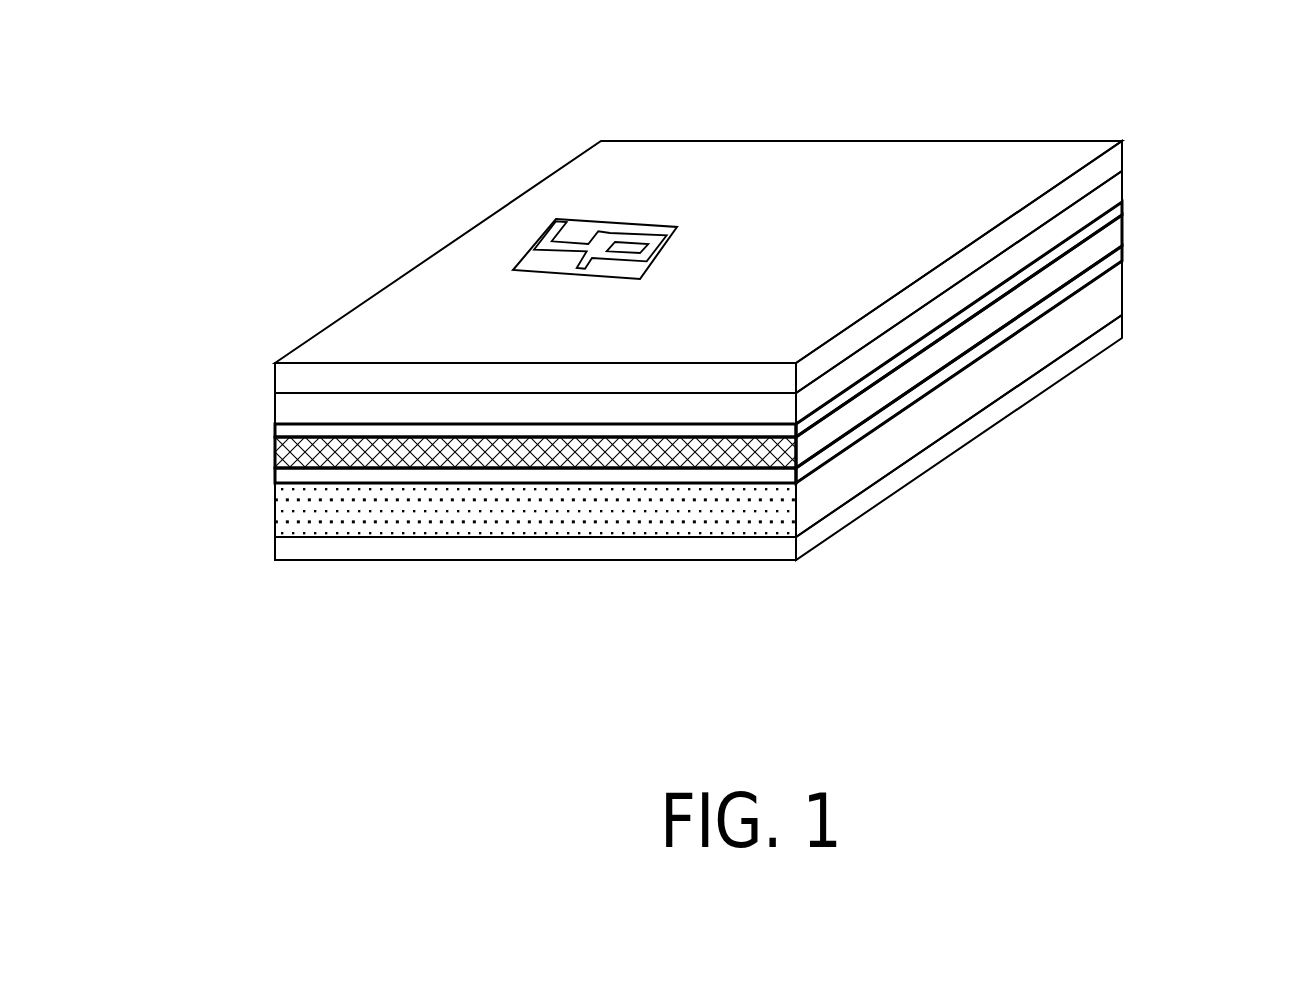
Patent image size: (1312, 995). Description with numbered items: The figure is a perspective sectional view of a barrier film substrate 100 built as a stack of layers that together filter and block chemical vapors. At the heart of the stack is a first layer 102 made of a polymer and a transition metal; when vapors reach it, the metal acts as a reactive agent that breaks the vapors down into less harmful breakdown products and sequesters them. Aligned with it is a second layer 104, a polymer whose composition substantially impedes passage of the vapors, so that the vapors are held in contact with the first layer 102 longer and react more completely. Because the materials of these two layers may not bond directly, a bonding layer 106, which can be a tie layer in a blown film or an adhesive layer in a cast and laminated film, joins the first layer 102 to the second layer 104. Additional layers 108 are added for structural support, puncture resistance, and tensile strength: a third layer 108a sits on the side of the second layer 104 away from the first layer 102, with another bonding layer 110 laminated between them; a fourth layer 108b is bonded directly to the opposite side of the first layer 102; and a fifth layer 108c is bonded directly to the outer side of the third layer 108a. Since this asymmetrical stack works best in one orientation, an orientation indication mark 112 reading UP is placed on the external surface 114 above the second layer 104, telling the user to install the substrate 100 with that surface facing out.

The barrier film substrate 100 is at (1160, 94).
The first layer 102 is at (796, 510).
The second layer 104 is at (796, 457).
The bonding layer 106 is at (273, 473).
The additional layers 108 is at (607, 350).
The third layer 108a is at (796, 408).
The fourth layer 108b is at (273, 547).
The fifth layer 108c is at (273, 377).
The bonding layer 110 is at (273, 427).
The orientation indication mark 112 is at (548, 225).
The external surface 114 is at (697, 153).